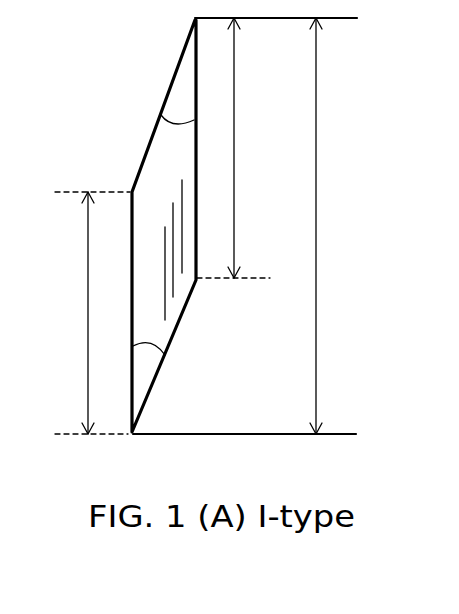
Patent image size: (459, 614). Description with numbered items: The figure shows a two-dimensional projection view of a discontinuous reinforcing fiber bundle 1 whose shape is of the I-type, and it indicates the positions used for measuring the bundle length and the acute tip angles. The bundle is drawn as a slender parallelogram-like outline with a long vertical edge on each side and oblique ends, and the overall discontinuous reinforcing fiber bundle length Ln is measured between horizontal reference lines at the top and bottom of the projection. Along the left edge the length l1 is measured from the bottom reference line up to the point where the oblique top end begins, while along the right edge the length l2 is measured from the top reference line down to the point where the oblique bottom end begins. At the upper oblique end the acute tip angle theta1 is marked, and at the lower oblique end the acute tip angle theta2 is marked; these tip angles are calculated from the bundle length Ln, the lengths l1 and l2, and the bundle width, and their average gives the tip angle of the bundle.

The two-dimensional projection view of discontinuous reinforcing fiber bundle 1 is at (154, 177).
The length l1 is at (62, 313).
The length l2 is at (250, 148).
The discontinuous reinforcing fiber bundle length Ln is at (336, 226).
The tip angle θ1 theta1 is at (188, 108).
The tip angle θ2 theta2 is at (135, 372).